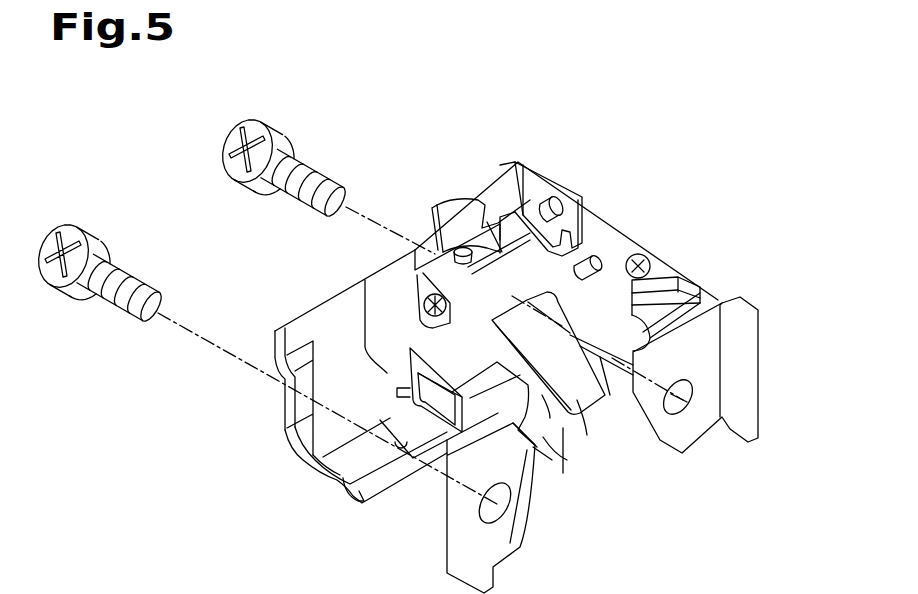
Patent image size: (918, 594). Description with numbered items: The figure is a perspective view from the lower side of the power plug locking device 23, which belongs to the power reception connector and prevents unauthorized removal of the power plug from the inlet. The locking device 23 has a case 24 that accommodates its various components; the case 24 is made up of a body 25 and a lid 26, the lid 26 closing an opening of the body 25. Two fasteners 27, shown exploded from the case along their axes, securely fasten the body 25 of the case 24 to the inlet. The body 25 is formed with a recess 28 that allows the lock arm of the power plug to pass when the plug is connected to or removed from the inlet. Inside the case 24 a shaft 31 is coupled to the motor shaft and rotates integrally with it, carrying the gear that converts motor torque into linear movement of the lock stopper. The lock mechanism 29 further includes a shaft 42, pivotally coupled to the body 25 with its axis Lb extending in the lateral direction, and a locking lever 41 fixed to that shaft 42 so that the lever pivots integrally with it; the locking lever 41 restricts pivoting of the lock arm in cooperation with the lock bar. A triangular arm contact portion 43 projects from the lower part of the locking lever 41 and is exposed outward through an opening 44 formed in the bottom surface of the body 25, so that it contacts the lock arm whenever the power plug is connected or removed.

The power plug locking device 23 is at (113, 92).
The case 24 is at (686, 203).
The body 25 is at (610, 241).
The lid 26 is at (566, 196).
The fasteners 27 is at (278, 123).
The recess 28 is at (634, 398).
The lock mechanism 29 is at (604, 422).
The shaft 31 is at (594, 265).
The locking lever 41 is at (548, 452).
The shaft 42 is at (540, 198).
The arm contact portion 43 is at (595, 428).
The opening 44 is at (585, 362).